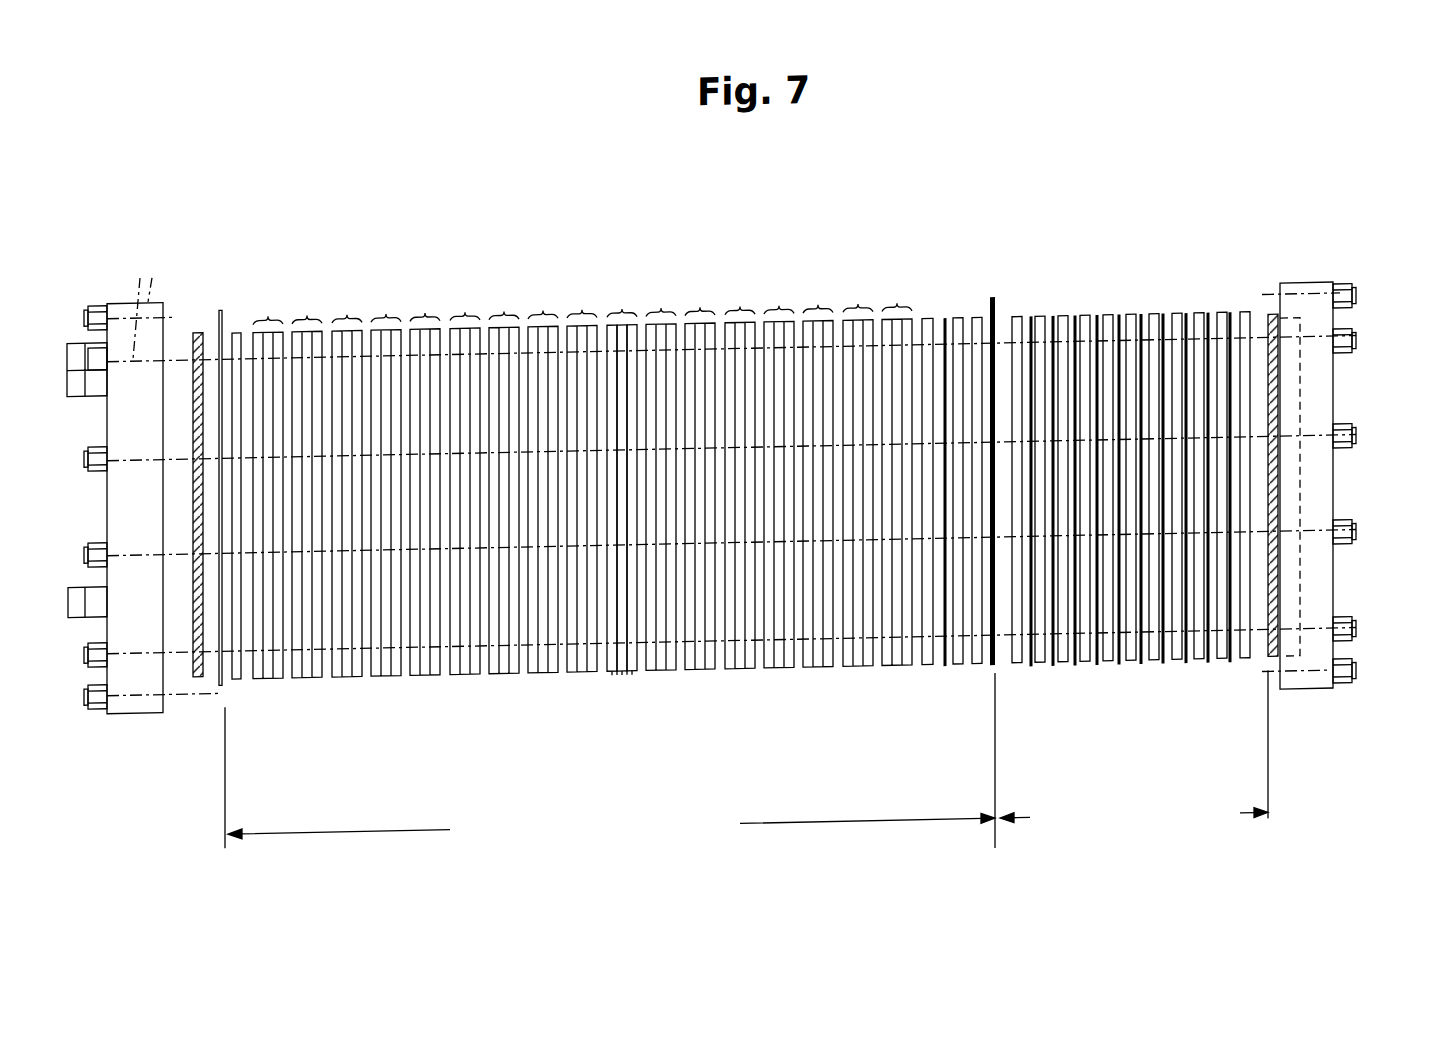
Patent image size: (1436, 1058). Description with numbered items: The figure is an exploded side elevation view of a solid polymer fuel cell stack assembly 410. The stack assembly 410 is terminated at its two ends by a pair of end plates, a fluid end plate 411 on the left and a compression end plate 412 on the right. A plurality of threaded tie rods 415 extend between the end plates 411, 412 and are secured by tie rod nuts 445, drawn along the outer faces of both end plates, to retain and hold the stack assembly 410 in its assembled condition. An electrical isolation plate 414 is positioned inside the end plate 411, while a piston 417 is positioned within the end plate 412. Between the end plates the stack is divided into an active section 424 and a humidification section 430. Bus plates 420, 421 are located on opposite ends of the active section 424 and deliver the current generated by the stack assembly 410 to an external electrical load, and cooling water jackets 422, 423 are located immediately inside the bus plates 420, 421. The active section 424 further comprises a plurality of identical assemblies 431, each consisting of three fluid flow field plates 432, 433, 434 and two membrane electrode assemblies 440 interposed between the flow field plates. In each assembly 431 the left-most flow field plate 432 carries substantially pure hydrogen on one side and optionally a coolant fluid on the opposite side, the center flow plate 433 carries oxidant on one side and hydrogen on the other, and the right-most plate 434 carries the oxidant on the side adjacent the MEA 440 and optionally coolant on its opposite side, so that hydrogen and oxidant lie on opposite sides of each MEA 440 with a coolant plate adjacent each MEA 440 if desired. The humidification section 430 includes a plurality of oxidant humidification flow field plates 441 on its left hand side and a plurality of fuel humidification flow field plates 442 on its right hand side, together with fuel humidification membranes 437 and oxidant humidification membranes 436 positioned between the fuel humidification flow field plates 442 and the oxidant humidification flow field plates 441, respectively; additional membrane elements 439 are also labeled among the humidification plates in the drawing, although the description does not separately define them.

The fuel cell stack assembly 410 is at (848, 247).
The fluid end plate 411 is at (137, 706).
The compression end plate 412 is at (1308, 711).
The electrical isolation plate 414 is at (196, 336).
The threaded tie rods 415 is at (139, 308).
The piston 417 is at (1271, 340).
The bus plate 420 is at (221, 314).
The bus plate 421 is at (993, 317).
The cooling water jacket 422 is at (238, 337).
The cooling water jacket 423 is at (977, 337).
The active section 424 is at (556, 740).
The humidification section 430 is at (1168, 735).
The assembly 431 is at (425, 322).
The flow field plate 432 is at (612, 686).
The center flow plate 433 is at (622, 686).
The flow field plate 434 is at (632, 686).
The oxidant humidification membranes 436 is at (1026, 337).
The fuel humidification membranes 437 is at (1165, 337).
The humidification membrane 439 is at (1086, 337).
The membrane electrode assembly 440 is at (617, 686).
The oxidant humidification flow field plates 441 is at (1017, 686).
The fuel humidification flow field plates 442 is at (1152, 686).
The tie rod nuts 445 is at (88, 692).